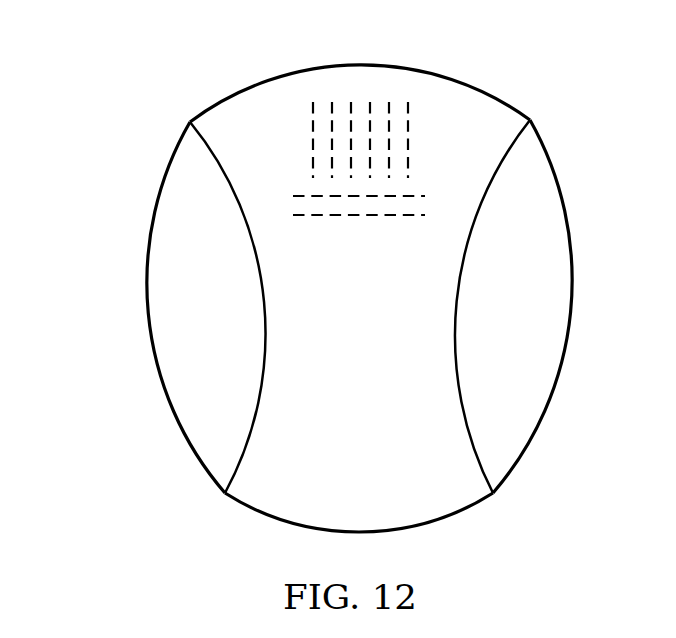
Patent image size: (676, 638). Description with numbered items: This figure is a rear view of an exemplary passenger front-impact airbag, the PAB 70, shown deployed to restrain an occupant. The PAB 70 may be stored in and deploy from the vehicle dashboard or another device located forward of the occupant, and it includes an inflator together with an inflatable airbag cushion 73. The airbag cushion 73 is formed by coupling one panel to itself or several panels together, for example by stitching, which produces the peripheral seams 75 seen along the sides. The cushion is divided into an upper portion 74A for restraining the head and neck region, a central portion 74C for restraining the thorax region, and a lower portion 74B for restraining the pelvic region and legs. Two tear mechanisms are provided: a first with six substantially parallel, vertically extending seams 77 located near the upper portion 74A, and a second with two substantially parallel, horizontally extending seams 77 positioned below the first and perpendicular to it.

The front-impact PAB 70 is at (148, 83).
The inflatable airbag cushion 73 is at (203, 211).
The upper portion 74A is at (474, 136).
The lower portion 74B is at (385, 460).
The central portion 74C is at (387, 339).
The peripheral seams 75 is at (170, 402).
The seams 77 is at (352, 112).